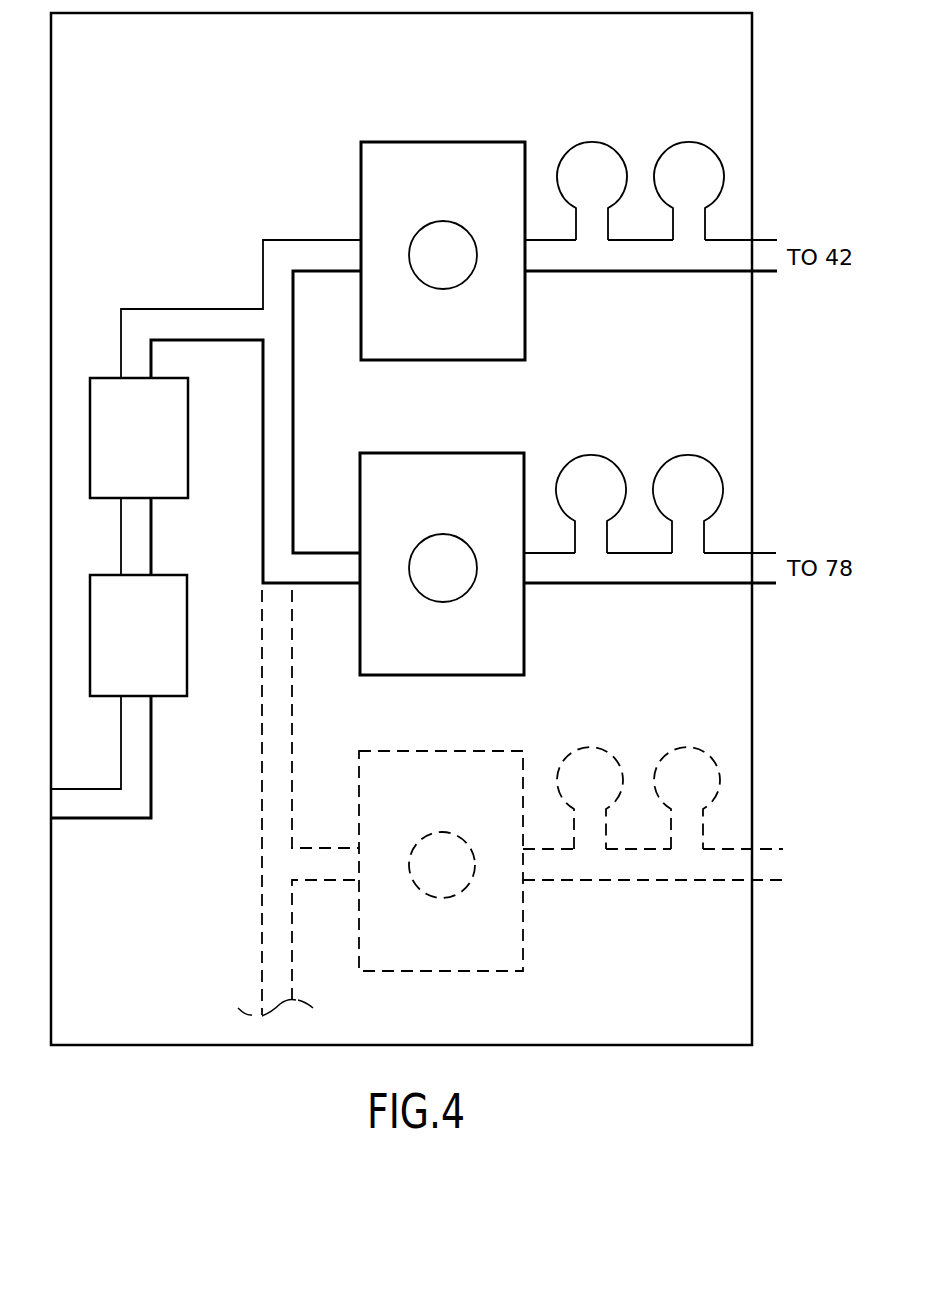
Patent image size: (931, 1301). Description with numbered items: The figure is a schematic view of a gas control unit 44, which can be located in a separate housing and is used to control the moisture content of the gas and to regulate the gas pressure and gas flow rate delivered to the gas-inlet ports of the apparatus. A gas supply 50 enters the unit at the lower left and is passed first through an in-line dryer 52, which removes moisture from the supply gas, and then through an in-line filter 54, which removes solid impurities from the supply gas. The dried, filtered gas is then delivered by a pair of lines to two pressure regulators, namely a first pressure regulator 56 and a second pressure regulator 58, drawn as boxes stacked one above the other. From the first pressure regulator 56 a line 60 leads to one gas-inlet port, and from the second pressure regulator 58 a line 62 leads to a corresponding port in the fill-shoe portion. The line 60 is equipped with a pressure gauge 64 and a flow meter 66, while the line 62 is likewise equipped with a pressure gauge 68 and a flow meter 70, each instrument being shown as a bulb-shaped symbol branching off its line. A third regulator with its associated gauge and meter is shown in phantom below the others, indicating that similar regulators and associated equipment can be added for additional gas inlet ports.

The gas control unit 44 is at (105, 1012).
The gas supply 50 is at (58, 803).
The in-line dryer 52 is at (154, 649).
The in-line filter 54 is at (154, 456).
The pressure regulator 56 is at (446, 193).
The pressure regulator 58 is at (446, 506).
The line 60 is at (598, 259).
The line 62 is at (595, 572).
The pressure gauge 64 is at (592, 158).
The flow meter 66 is at (688, 165).
The pressure gauge 68 is at (591, 470).
The flow meter 70 is at (687, 478).